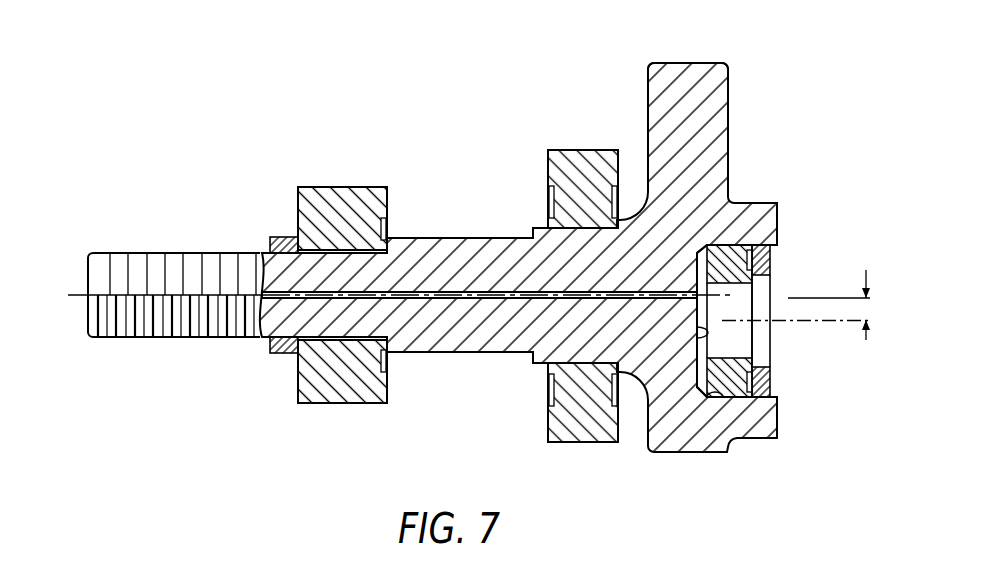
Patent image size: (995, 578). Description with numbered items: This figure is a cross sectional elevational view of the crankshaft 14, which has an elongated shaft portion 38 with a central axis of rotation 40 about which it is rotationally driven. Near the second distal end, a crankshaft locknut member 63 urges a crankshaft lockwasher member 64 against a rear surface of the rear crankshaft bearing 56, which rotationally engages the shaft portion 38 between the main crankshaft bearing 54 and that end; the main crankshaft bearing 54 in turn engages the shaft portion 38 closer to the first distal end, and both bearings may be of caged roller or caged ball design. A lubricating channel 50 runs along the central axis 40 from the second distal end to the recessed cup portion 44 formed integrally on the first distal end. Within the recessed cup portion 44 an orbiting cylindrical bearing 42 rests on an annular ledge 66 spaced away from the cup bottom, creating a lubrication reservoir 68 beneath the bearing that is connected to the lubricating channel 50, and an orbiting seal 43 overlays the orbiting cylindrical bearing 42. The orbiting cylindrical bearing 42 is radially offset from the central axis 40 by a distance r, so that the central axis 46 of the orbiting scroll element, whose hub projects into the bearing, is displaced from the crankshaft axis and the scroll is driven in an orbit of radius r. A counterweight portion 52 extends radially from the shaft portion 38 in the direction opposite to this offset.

The crankshaft 14 is at (433, 226).
The shaft portion 38 is at (493, 352).
The central axis of rotation 40 is at (78, 294).
The orbiting cylindrical bearing 42 is at (740, 349).
The orbiting seal 43 is at (766, 386).
The recessed cup portion 44 is at (697, 333).
The central axis 46 is at (838, 322).
The lubricating channel 50 is at (452, 300).
The counterweight portion 52 is at (696, 70).
The main crankshaft bearing 54 is at (566, 156).
The rear crankshaft bearing 56 is at (326, 194).
The crankshaft locknut member 63 is at (287, 242).
The crankshaft lockwasher member 64 is at (291, 356).
The annular ledge 66 is at (722, 398).
The lubrication reservoir 68 is at (703, 270).